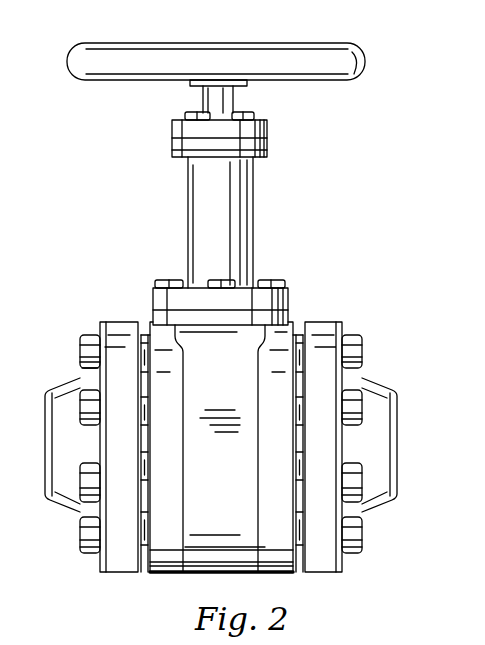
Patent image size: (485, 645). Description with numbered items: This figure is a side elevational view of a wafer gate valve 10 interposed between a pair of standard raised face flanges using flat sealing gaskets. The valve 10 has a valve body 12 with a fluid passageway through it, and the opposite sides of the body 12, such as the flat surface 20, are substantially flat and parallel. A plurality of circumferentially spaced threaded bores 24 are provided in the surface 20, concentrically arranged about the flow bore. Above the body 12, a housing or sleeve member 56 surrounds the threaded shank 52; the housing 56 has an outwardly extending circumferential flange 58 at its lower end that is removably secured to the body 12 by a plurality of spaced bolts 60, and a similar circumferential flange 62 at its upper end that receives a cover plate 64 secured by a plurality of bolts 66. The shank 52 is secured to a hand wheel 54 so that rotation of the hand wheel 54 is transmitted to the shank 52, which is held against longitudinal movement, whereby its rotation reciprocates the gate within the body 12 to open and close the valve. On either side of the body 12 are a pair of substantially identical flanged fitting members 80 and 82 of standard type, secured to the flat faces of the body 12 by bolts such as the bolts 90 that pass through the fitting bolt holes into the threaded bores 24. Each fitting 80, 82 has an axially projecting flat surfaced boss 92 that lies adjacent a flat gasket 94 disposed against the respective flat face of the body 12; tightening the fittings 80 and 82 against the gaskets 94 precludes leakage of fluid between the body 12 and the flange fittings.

The wafer gate valve 10 is at (253, 205).
The valve body 12 is at (202, 348).
The side surface of the body 20 is at (150, 568).
The threaded bores 24 is at (295, 333).
The threaded shank 52 is at (222, 95).
The hand wheel 54 is at (143, 57).
The housing or sleeve member 56 is at (210, 220).
The circumferential flange 58 is at (262, 300).
The bolts 60 is at (268, 282).
The circumferential flange 62 is at (190, 147).
The cover plate 64 is at (247, 127).
The bolts 66 is at (185, 116).
The flanged fitting member 80 is at (65, 500).
The flanged fitting member 82 is at (362, 355).
The bolts 90 is at (362, 535).
The flat surfaced boss 92 is at (138, 378).
The flat gasket 94 is at (303, 377).